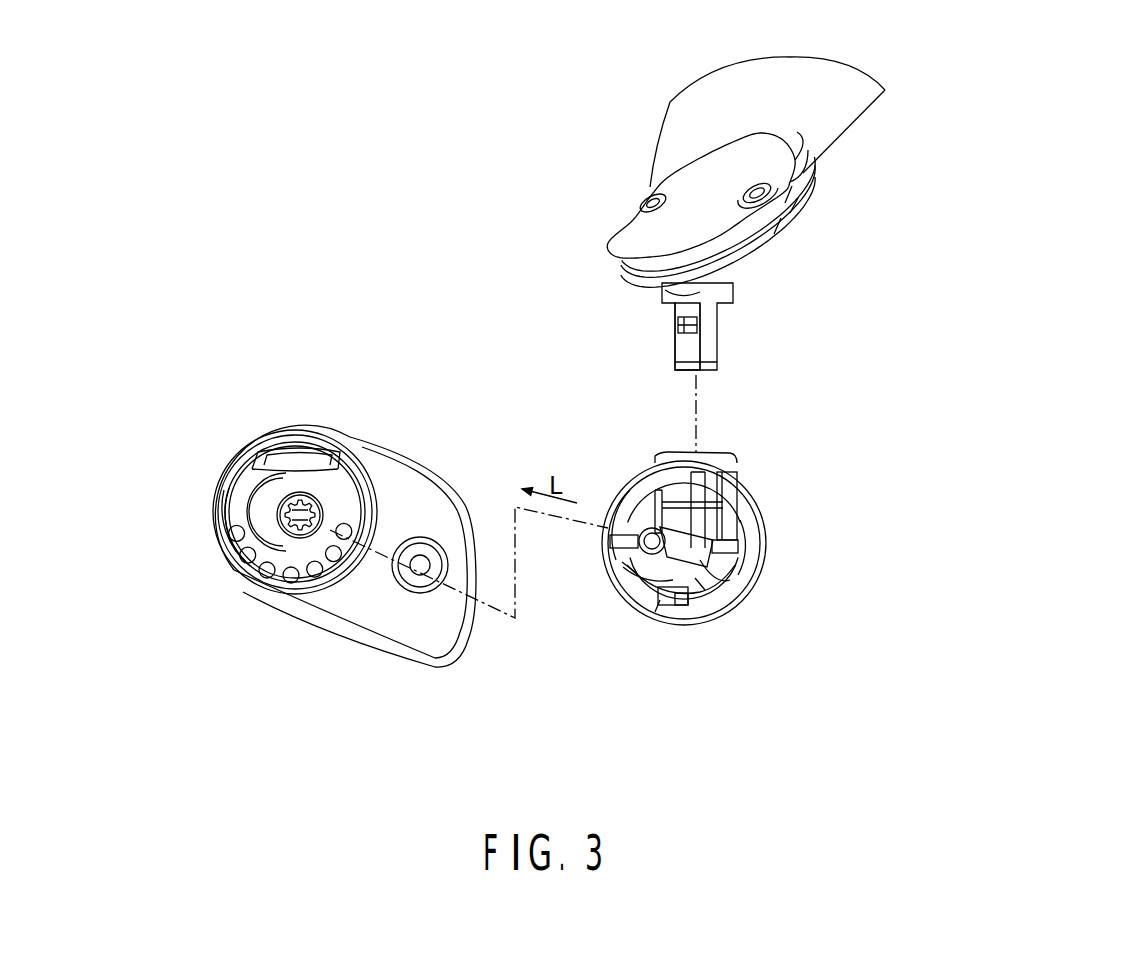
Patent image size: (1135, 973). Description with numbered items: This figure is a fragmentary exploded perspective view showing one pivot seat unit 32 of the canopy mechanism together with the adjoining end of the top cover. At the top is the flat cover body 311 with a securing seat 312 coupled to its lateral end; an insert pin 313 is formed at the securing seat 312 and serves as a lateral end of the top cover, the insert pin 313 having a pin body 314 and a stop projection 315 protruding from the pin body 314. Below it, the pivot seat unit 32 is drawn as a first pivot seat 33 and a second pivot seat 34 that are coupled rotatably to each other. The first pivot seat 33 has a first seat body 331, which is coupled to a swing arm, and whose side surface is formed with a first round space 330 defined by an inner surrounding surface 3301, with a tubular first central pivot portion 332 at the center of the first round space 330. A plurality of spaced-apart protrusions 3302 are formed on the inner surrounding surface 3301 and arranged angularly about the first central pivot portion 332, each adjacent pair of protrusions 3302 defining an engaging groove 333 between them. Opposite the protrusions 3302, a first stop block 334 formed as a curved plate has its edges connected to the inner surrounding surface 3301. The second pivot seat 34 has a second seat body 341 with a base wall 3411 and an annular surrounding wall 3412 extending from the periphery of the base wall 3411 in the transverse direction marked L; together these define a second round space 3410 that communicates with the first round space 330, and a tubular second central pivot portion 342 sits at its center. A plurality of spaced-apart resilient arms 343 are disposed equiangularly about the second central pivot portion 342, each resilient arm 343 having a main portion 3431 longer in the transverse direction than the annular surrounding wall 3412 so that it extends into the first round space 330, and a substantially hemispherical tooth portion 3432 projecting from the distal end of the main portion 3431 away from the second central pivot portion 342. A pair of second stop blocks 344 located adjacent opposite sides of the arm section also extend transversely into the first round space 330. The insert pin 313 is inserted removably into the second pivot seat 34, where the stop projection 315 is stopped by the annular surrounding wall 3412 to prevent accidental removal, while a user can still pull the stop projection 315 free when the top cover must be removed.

The pivot seat unit 32 is at (422, 255).
The cover body 311 is at (828, 140).
The securing seat 312 is at (643, 243).
The insert pin 313 is at (723, 337).
The pin body 314 is at (680, 347).
The stop projection 315 is at (677, 325).
The first pivot seat 33 is at (462, 497).
The first round space 330 is at (240, 505).
The inner surrounding surface 3301 is at (300, 497).
The protrusions 3302 is at (237, 552).
The first seat body 331 is at (408, 483).
The first central pivot portion 332 is at (307, 487).
The engaging grooves 333 is at (308, 563).
The first stop block 334 is at (278, 458).
The second pivot seat 34 is at (613, 490).
The second seat body 341 is at (758, 513).
The second round space 3410 is at (702, 488).
The base wall 3411 is at (712, 498).
The annular surrounding wall 3412 is at (755, 565).
The second central pivot portion 342 is at (647, 550).
The resilient arms 343 is at (720, 582).
The main portion 3431 is at (682, 607).
The tooth portion 3432 is at (697, 580).
The second stop blocks 344 is at (712, 553).